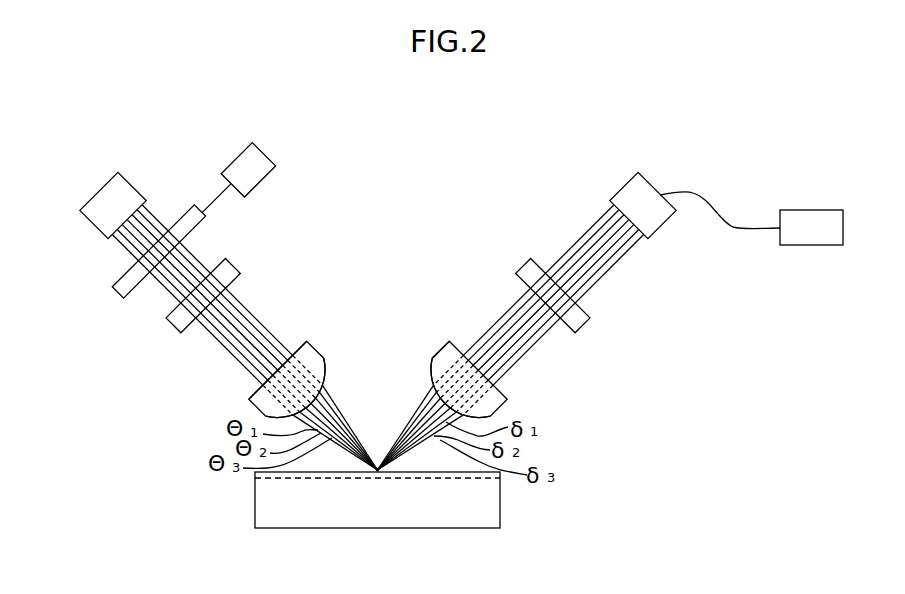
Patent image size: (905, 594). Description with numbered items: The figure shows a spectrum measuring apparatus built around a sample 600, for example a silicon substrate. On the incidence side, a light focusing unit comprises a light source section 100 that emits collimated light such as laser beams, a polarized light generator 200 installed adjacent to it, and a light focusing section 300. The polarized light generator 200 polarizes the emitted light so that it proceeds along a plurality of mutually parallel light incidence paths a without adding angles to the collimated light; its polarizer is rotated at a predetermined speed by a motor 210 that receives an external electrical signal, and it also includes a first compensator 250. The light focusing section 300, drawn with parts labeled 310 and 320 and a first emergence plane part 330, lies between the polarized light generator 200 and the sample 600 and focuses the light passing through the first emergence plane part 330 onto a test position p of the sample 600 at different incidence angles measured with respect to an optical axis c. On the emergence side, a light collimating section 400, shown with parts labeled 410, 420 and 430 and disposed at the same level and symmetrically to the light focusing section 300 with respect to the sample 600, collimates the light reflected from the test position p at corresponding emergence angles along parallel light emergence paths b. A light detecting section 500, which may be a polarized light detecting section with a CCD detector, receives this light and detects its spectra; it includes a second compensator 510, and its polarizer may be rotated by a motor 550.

The light source section 100 is at (93, 217).
The polarized light generator 200 is at (115, 283).
The motor 210 is at (261, 153).
The first compensator 250 is at (170, 323).
The light focusing section 300 is at (348, 322).
The first lens 310 is at (319, 347).
The light incident surface of first lens 320 is at (302, 340).
The first emergence plane part 330 is at (324, 389).
The light collimating section 400 is at (477, 297).
The second lens 410 is at (462, 352).
The surface of second lens 420 is at (438, 348).
The curved surface of second lens 430 is at (429, 387).
The light detecting section 500 is at (663, 223).
The second compensator 510 is at (598, 310).
The motor 550 is at (798, 217).
The sample 600 is at (477, 520).
The light incidence paths a is at (240, 360).
The light emergence paths b is at (518, 358).
The optical axis c is at (176, 277).
The test position p is at (379, 473).